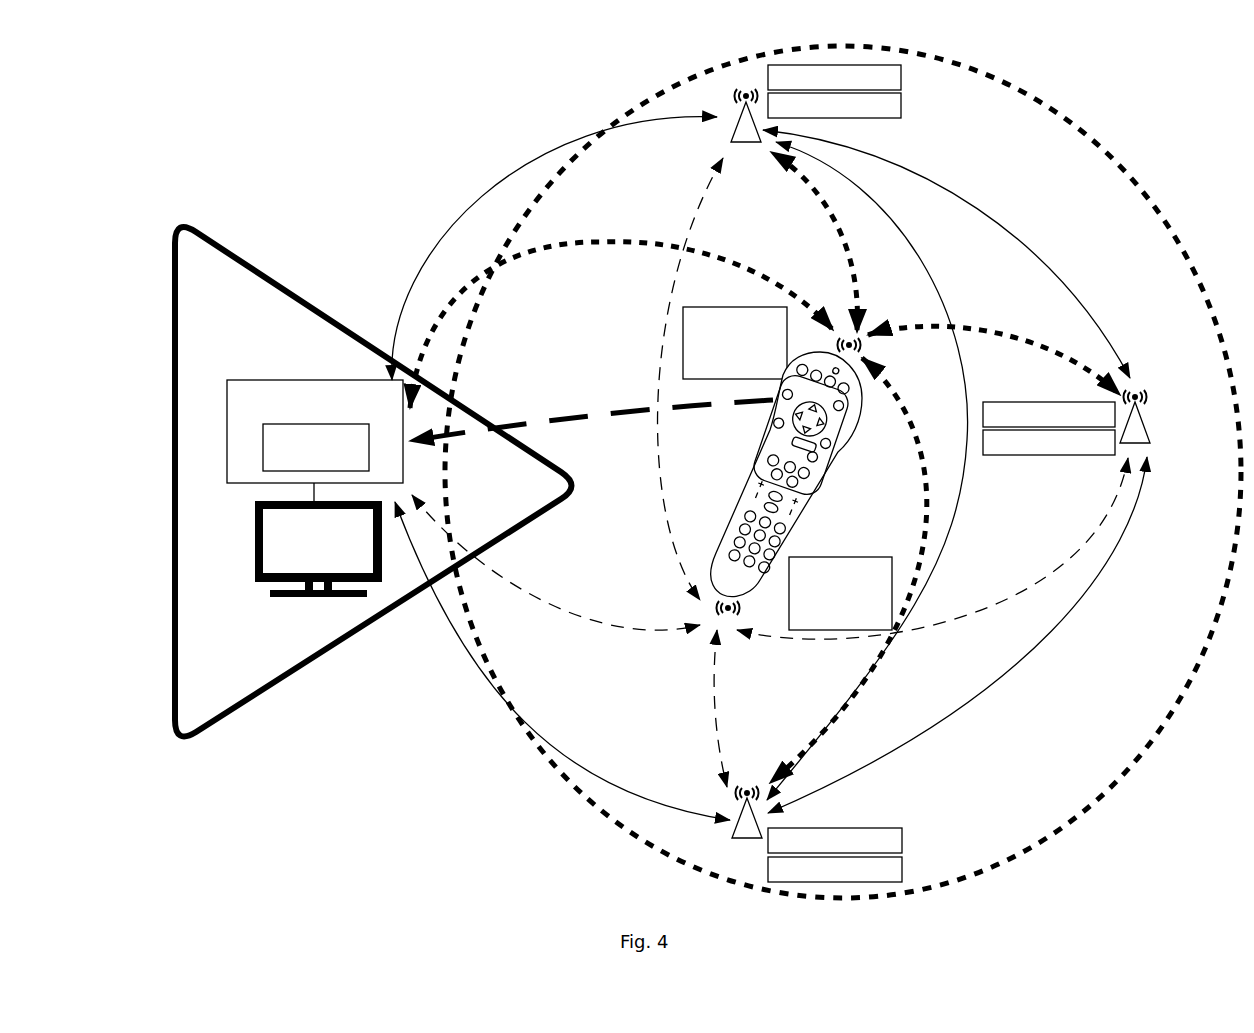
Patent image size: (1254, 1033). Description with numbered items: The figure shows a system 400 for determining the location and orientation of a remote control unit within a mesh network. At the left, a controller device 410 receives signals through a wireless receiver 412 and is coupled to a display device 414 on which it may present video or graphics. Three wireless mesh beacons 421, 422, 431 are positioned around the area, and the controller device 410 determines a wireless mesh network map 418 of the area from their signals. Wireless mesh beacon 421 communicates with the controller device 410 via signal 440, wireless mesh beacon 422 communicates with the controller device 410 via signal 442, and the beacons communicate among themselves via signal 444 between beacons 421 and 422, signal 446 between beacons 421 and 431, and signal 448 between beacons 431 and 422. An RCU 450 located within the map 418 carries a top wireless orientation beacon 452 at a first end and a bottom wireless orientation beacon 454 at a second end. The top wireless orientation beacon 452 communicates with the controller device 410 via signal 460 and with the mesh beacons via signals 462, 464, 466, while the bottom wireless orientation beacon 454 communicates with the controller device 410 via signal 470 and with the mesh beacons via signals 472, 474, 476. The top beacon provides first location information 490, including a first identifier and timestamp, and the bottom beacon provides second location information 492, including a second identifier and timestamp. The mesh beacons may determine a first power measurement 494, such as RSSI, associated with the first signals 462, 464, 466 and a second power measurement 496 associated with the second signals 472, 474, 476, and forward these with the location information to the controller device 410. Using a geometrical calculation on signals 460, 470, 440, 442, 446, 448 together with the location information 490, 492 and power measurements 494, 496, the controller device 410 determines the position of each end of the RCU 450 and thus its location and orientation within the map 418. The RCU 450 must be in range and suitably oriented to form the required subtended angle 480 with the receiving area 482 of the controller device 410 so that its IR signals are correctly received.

The system 400 is at (150, 78).
The controller device 410 is at (291, 409).
The wireless receiver 412 is at (263, 447).
The display device 414 is at (255, 548).
The wireless mesh network map 418 is at (1010, 853).
The wireless mesh beacon 421 is at (738, 120).
The wireless mesh beacon 422 is at (735, 830).
The wireless mesh beacon 431 is at (1143, 423).
The signal 440 is at (508, 177).
The signal 442 is at (500, 697).
The signal 444 is at (965, 477).
The signal 446 is at (998, 225).
The signal 448 is at (1012, 670).
The RCU 450 is at (815, 490).
The top wireless orientation beacon 452 is at (842, 327).
The bottom wireless orientation beacon 454 is at (720, 618).
The signal 460 is at (637, 240).
The signal 462 is at (818, 190).
The signal 464 is at (1003, 333).
The signal 466 is at (820, 733).
The signal 470 is at (580, 613).
The signal 472 is at (708, 205).
The signal 474 is at (990, 622).
The signal 476 is at (713, 707).
The subtended angle 480 is at (577, 420).
The receiving area 482 is at (300, 672).
The first location information 490 is at (683, 337).
The second location information 492 is at (892, 578).
The first power measurement 494 is at (901, 77).
The second power measurement 496 is at (901, 105).